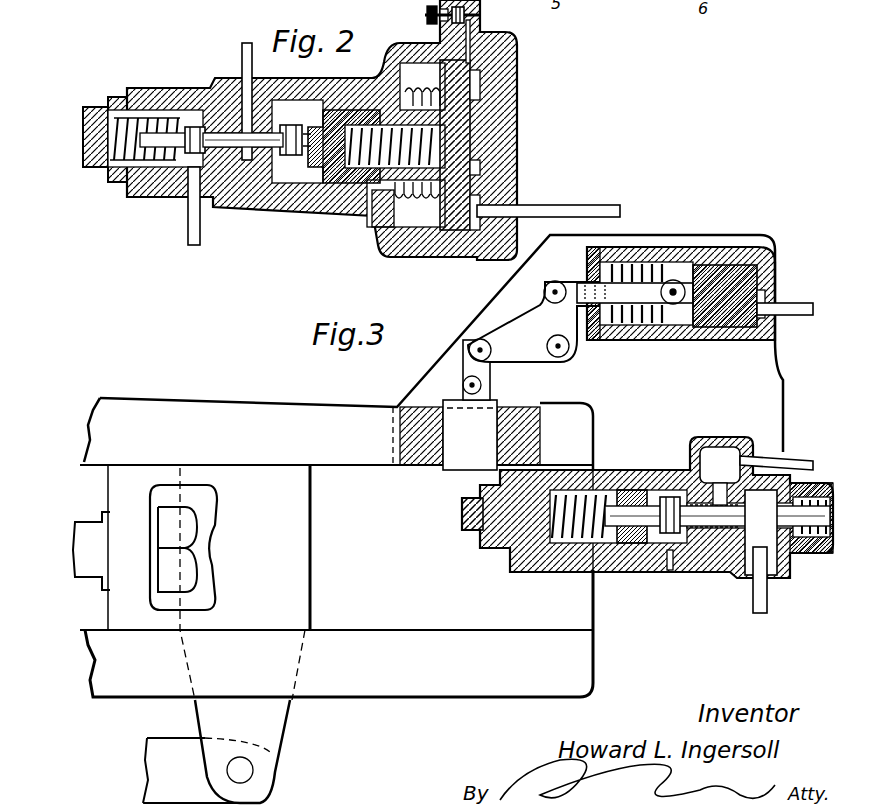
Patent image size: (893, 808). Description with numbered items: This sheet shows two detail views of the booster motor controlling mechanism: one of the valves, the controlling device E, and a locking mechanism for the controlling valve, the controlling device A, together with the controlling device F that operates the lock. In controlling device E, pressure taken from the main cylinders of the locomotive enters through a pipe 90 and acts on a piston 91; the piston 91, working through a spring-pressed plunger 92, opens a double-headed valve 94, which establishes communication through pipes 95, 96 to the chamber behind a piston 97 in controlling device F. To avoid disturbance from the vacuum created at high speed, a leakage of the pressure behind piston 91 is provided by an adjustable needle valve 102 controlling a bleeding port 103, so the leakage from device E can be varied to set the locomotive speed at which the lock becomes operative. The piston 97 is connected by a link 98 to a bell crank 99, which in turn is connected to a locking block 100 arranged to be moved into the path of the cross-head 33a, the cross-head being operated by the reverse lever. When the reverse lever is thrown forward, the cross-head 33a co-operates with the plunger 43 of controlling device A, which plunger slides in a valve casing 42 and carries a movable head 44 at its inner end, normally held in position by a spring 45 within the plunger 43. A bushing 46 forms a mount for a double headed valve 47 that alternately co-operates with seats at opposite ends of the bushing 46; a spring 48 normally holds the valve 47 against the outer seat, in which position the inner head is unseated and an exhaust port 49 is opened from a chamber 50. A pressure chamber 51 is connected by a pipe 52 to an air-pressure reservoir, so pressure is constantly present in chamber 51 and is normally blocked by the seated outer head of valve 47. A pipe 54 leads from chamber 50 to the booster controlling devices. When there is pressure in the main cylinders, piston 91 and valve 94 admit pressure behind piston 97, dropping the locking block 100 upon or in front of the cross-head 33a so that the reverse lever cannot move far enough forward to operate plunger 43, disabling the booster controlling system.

In FIG. 2, the controlling device E is at (336, 209).
In FIG. 2, the pipe 90 is at (564, 206).
In FIG. 2, the piston 91 is at (458, 90).
In FIG. 2, the spring-pressed plunger 92 is at (327, 137).
In FIG. 2, the double-headed valve 94 is at (258, 150).
In FIG. 2, the pipe 95 is at (190, 231).
In FIG. 2, the pipe 96 is at (243, 56).
In FIG. 3, the pipe 96 is at (798, 306).
In FIG. 2, the adjustable needle valve 102 is at (428, 13).
In FIG. 2, the bleeding port 103 is at (482, 16).
In FIG. 3, the cross-head 33a is at (428, 519).
In FIG. 3, the locking block 100 is at (470, 405).
In FIG. 3, the bell crank 99 is at (552, 322).
In FIG. 3, the controlling device F is at (750, 246).
In FIG. 3, the link 98 is at (657, 285).
In FIG. 3, the piston 97 is at (728, 270).
In FIG. 3, the controlling device A is at (647, 500).
In FIG. 3, the valve casing 42 is at (553, 567).
In FIG. 3, the plunger 43 is at (463, 513).
In FIG. 3, the movable head 44 is at (631, 505).
In FIG. 3, the spring 45 is at (588, 555).
In FIG. 3, the bushing 46 is at (737, 530).
In FIG. 3, the double headed valve 47 is at (712, 530).
In FIG. 3, the spring 48 is at (814, 553).
In FIG. 3, the exhaust port 49 is at (669, 571).
In FIG. 3, the chamber 50 is at (720, 476).
In FIG. 3, the pressure chamber 51 is at (784, 578).
In FIG. 3, the pipe 52 is at (760, 616).
In FIG. 3, the pipe 54 is at (801, 460).